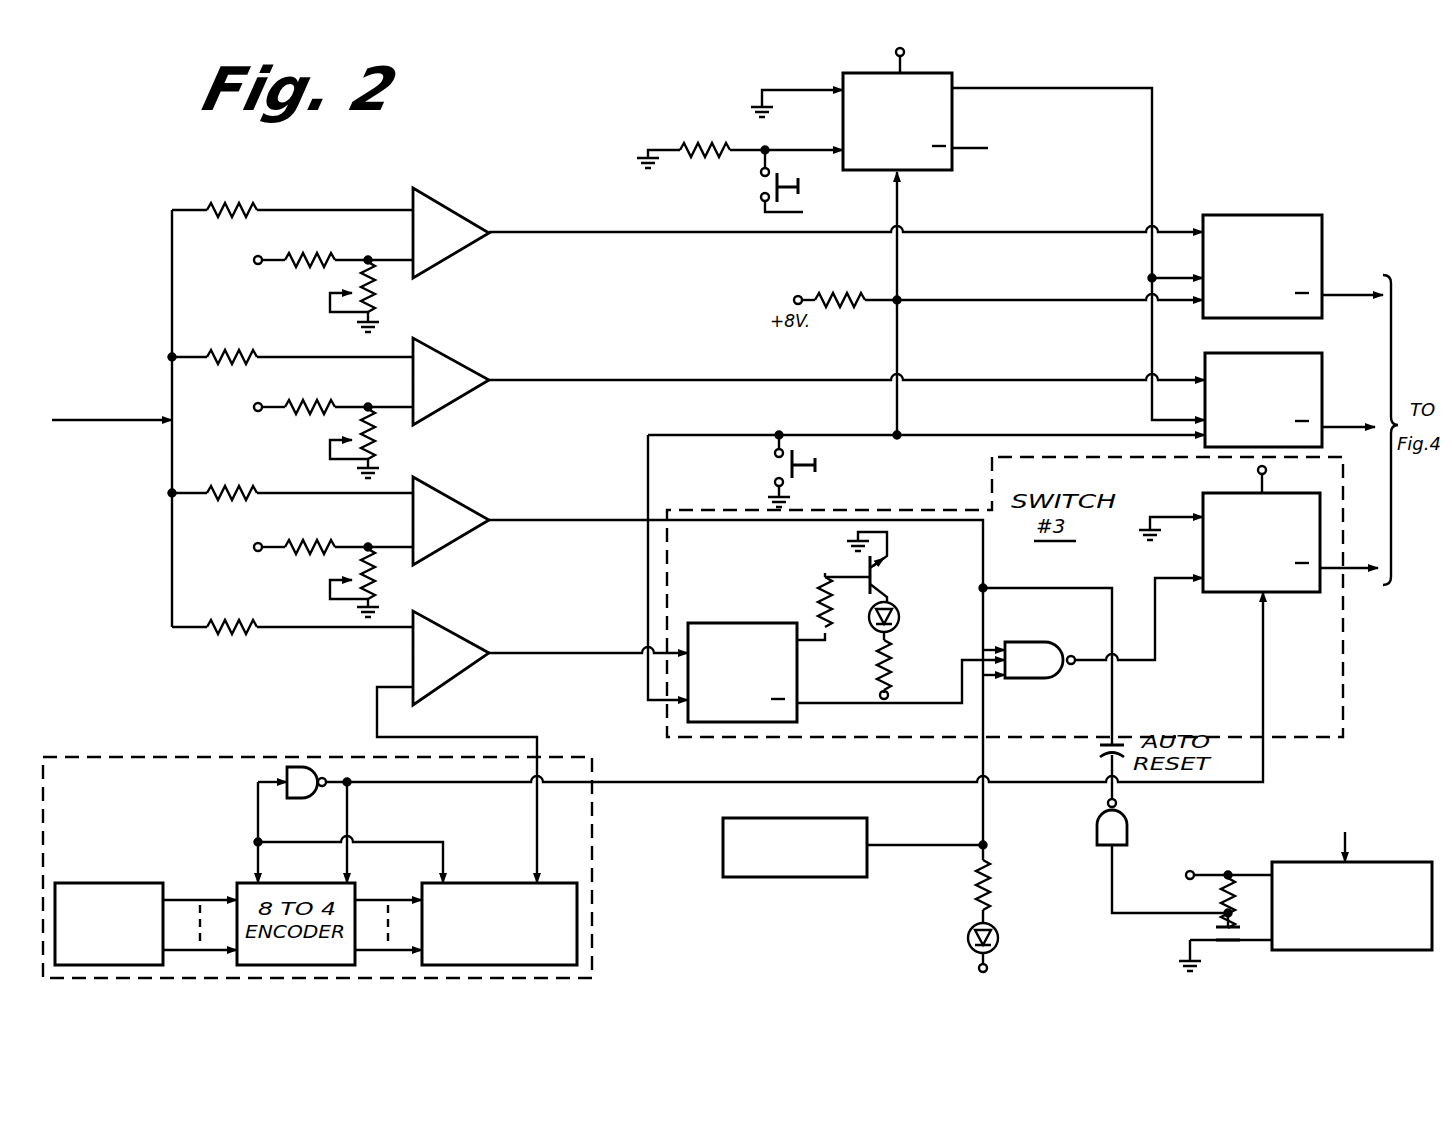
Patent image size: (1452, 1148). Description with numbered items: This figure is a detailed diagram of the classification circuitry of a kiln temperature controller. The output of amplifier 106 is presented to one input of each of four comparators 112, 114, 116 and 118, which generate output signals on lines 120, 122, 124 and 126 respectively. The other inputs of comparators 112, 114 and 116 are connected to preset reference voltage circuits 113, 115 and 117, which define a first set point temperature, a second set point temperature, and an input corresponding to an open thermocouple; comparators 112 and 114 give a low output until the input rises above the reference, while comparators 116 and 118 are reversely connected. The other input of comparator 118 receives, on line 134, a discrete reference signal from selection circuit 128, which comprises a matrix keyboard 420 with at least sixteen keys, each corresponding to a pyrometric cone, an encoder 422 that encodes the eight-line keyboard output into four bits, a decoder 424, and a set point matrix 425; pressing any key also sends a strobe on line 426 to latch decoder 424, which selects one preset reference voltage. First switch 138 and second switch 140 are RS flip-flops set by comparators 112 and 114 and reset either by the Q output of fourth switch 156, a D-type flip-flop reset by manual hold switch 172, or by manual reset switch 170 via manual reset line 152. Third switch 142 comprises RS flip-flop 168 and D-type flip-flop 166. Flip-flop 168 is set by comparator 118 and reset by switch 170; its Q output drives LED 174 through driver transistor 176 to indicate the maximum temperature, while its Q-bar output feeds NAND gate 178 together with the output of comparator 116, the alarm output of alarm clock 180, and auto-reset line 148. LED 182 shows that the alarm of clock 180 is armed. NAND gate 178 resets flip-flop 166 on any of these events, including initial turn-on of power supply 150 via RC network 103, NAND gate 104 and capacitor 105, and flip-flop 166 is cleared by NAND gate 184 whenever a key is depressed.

The amplifier 106 is at (110, 436).
The comparator 112 is at (467, 195).
The preset reference voltage circuit 113 is at (318, 289).
The comparator 114 is at (467, 342).
The preset reference voltage circuit 115 is at (318, 435).
The comparator 116 is at (452, 497).
The preset reference voltage circuit 117 is at (312, 574).
The comparator 118 is at (455, 641).
The output line 120 is at (580, 240).
The output line 122 is at (550, 380).
The output line 124 is at (523, 522).
The output line 126 is at (530, 656).
The selection circuit 128 is at (170, 756).
The reference signal line 134 is at (472, 738).
The first switch 138 is at (1290, 215).
The second switch 140 is at (1322, 385).
The third switch 142 is at (1345, 722).
The auto-reset line 148 is at (1112, 714).
The power supply 150 is at (1297, 843).
The manual reset signal line 152 is at (904, 349).
The fourth switch 156 is at (955, 113).
The D-type flip-flop 166 is at (1240, 502).
The RS flip-flop 168 is at (745, 628).
The manual reset switch 170 is at (775, 466).
The manual hold switch 172 is at (757, 183).
The LED 174 is at (899, 615).
The driver transistor 176 is at (888, 573).
The NAND gate 178 is at (1058, 630).
The alarm clock 180 is at (778, 880).
The LED 182 is at (996, 933).
The NAND gate 184 is at (305, 766).
The RC network 103 is at (1218, 903).
The NAND gate 104 is at (1122, 835).
The capacitor 105 is at (1106, 766).
The matrix keyboard 420 is at (156, 862).
The encoder 422 is at (312, 870).
The decoder 424 is at (520, 883).
The set point matrix 425 is at (499, 914).
The strobe line 426 is at (260, 812).